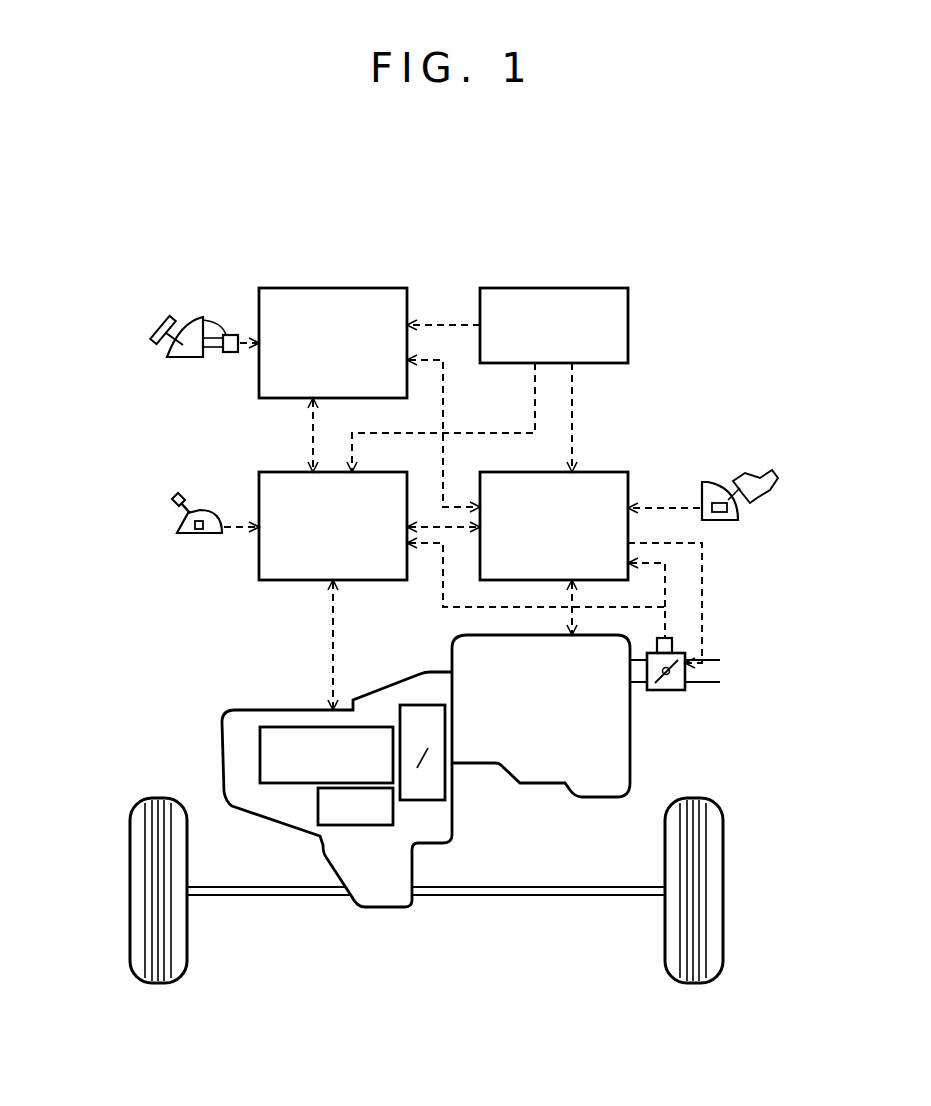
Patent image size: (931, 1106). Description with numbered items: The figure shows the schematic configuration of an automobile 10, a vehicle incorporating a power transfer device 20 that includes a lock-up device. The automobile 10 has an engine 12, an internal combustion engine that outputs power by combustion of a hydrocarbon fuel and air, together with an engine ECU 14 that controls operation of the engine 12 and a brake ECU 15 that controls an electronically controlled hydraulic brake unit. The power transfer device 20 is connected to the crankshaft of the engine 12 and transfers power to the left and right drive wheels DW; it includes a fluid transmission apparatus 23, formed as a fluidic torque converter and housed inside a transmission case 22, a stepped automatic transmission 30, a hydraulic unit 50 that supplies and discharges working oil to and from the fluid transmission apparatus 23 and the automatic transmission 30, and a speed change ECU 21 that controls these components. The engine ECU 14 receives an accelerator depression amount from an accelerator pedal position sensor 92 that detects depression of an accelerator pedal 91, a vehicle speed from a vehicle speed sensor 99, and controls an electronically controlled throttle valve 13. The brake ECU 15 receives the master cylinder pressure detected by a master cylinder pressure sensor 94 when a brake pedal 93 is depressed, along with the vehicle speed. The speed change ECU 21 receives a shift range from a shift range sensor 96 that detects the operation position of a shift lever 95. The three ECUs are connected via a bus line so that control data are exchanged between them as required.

The automobile 10 is at (722, 335).
The engine 12 is at (555, 784).
The throttle valve 13 is at (665, 690).
The engine ECU 14 is at (606, 471).
The brake ECU 15 is at (330, 288).
The power transfer device 20 is at (185, 700).
The speed change ECU 21 is at (281, 471).
The transmission case 22 is at (263, 709).
The fluid transmission apparatus 23 is at (403, 705).
The automatic transmission 30 is at (260, 742).
The hydraulic unit 50 is at (318, 805).
The accelerator pedal 91 is at (752, 488).
The accelerator pedal position sensor 92 is at (740, 510).
The brake pedal 93 is at (156, 326).
The master cylinder pressure sensor 94 is at (172, 336).
The shift lever 95 is at (175, 502).
The shift range sensor 96 is at (179, 520).
The vehicle speed sensor 99 is at (551, 288).
The drive wheels DW is at (130, 896).